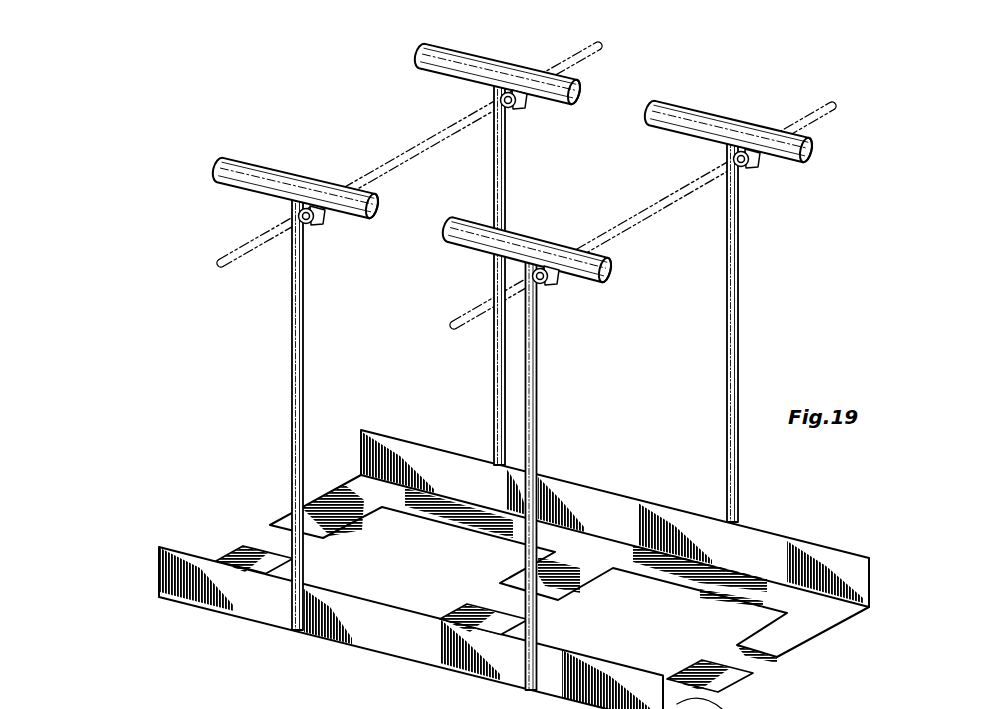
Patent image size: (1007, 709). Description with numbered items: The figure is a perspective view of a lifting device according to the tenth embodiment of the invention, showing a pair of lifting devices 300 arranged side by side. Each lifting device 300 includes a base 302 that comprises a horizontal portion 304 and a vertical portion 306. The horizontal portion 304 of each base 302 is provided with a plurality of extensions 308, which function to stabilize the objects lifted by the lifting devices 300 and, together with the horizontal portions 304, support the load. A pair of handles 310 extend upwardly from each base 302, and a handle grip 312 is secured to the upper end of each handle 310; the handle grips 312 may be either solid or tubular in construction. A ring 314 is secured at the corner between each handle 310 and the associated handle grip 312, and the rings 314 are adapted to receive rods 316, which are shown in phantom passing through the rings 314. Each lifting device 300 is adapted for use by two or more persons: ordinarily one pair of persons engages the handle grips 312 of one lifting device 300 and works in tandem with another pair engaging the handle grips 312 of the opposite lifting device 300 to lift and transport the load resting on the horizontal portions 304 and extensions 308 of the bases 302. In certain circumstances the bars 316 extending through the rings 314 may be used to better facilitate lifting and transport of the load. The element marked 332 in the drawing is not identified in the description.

The lifting device 300 is at (520, 528).
The base 302 is at (197, 538).
The horizontal portion 304 is at (821, 610).
The vertical portion 306 is at (791, 565).
The extension 308 is at (286, 519).
The handle 310 is at (291, 410).
The handle grip 312 is at (277, 172).
The ring 314 is at (311, 230).
The rod 316 is at (420, 142).
The cross member 332 is at (388, 708).